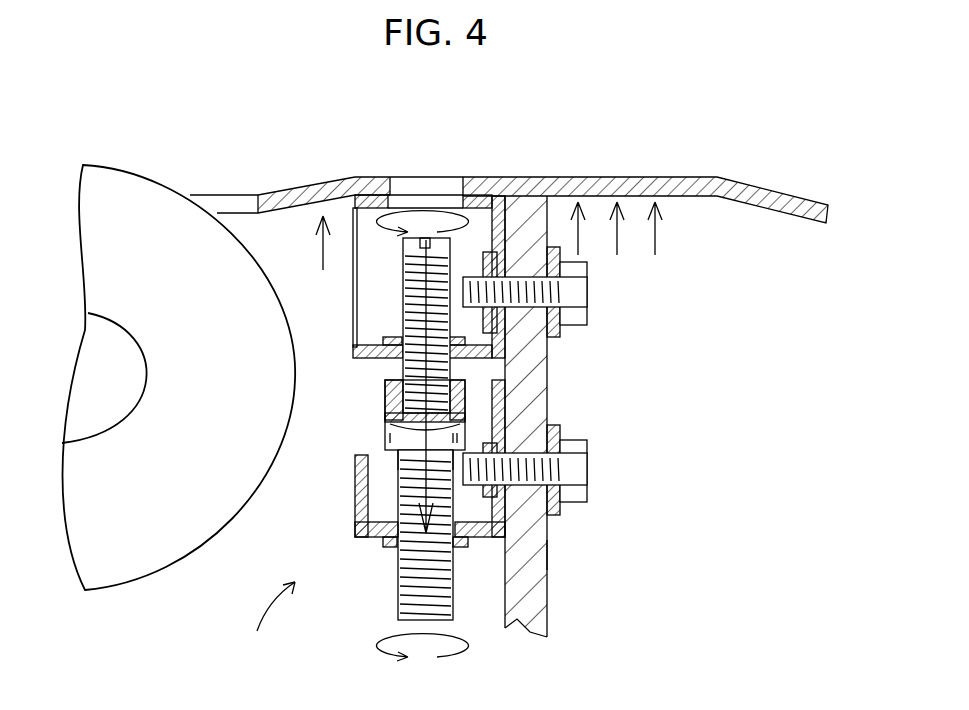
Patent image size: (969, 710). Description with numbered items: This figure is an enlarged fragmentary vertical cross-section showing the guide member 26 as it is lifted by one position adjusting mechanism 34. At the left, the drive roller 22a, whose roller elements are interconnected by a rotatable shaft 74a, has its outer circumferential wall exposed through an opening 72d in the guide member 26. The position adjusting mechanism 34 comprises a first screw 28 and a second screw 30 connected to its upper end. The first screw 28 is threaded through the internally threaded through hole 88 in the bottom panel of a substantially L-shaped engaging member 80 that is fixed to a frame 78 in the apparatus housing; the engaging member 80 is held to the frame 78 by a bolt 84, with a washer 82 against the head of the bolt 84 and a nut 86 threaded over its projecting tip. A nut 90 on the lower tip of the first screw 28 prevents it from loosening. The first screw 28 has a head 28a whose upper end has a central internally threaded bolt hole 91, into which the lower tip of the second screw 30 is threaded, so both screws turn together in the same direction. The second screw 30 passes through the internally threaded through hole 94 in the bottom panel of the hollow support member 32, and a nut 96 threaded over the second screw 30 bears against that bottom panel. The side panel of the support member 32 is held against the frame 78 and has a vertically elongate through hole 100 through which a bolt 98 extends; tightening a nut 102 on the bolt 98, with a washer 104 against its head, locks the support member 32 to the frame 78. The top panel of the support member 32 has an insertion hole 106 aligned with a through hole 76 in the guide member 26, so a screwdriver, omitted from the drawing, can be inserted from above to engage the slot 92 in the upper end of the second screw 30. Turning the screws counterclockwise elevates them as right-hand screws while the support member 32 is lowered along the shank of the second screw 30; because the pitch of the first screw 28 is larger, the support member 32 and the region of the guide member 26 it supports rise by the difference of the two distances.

The drive roller 22a is at (92, 560).
The rotatable shaft 74a is at (108, 382).
The position adjusting mechanism 34 is at (269, 621).
The opening 72d is at (182, 173).
The through hole 76 is at (452, 177).
The second screw 30 is at (512, 177).
The through hole 100 is at (553, 178).
The guide member 26 is at (750, 191).
The support member 32 is at (560, 372).
The frame 78 is at (548, 583).
The through hole 88 is at (560, 552).
The insertion hole 106 is at (404, 177).
The nut 96 is at (357, 330).
The slot 92 is at (430, 240).
The through hole 94 is at (400, 371).
The bolt hole 91 is at (388, 410).
The first screw 28 is at (399, 603).
The head 28a is at (385, 443).
The engaging member 80 is at (361, 503).
The nut 90 is at (388, 547).
The nut 102 is at (552, 338).
The washer 104 is at (588, 267).
The bolt 98 is at (577, 297).
The washer 82 is at (560, 428).
The nut 86 is at (562, 508).
The bolt 84 is at (573, 471).